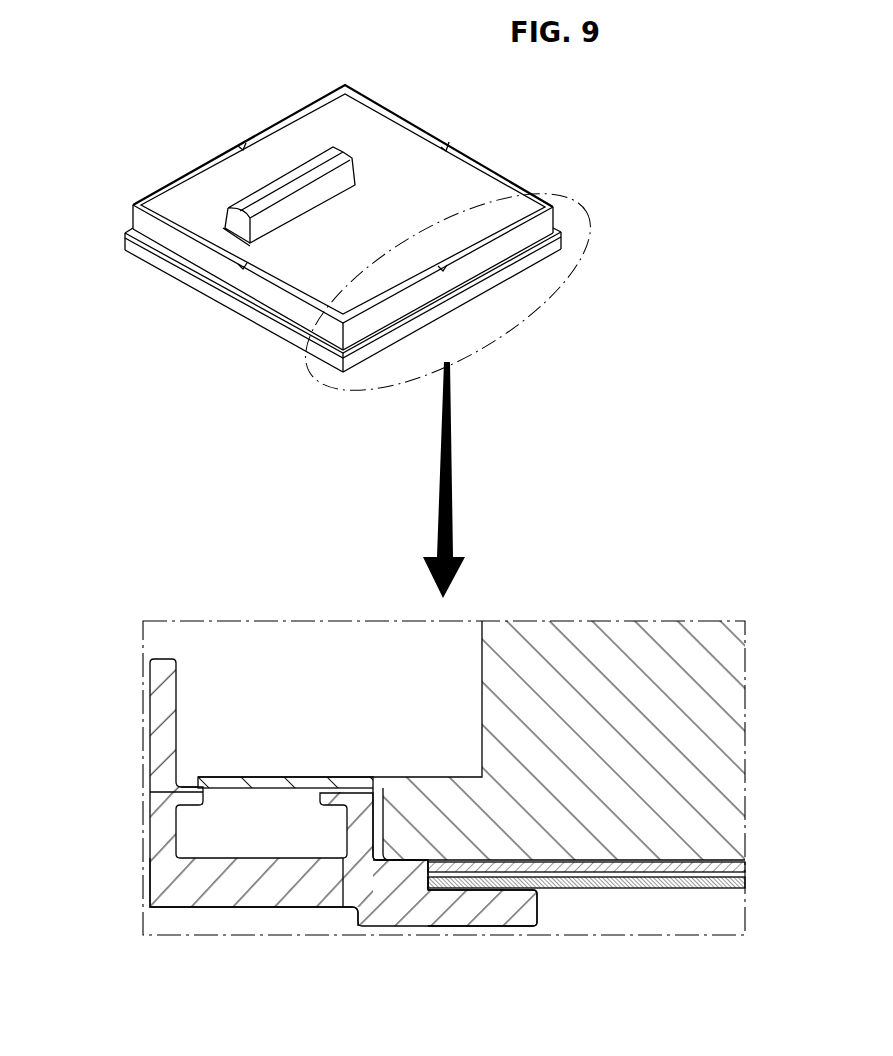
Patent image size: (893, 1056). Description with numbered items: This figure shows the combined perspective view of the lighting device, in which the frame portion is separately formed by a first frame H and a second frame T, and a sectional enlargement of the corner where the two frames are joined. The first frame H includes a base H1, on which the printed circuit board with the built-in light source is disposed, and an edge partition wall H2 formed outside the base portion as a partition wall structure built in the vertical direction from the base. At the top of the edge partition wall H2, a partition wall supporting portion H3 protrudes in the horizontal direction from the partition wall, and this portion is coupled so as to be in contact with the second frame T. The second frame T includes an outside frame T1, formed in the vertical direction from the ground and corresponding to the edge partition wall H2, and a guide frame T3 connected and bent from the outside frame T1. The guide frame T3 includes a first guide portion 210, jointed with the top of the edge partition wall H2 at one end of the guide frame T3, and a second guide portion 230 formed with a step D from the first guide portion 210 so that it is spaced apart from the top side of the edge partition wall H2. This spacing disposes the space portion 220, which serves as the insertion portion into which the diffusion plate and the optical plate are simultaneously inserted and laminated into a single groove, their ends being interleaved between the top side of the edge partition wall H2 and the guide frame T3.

The first frame H is at (528, 157).
The base H1 is at (467, 169).
The edge partition wall H2 is at (522, 235).
The partition wall supporting portion H3 is at (409, 803).
The second frame T is at (510, 272).
The outside frame T1 is at (160, 848).
The guide frame T3 is at (238, 882).
The step D is at (433, 860).
The first guide portion 210 is at (398, 860).
The space portion 220 is at (425, 882).
The second guide portion 230 is at (505, 908).